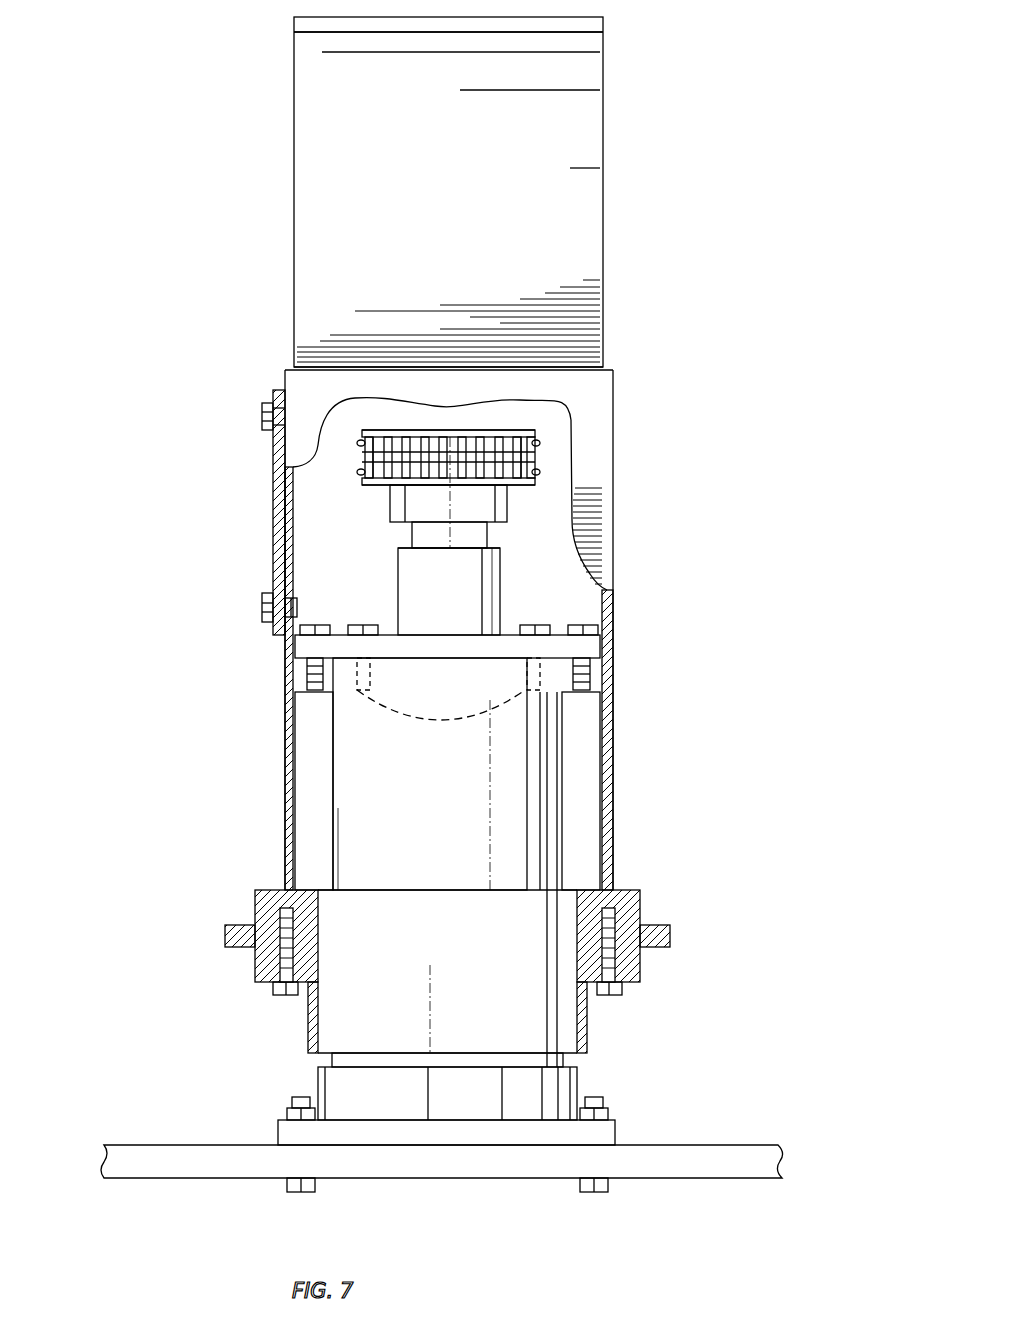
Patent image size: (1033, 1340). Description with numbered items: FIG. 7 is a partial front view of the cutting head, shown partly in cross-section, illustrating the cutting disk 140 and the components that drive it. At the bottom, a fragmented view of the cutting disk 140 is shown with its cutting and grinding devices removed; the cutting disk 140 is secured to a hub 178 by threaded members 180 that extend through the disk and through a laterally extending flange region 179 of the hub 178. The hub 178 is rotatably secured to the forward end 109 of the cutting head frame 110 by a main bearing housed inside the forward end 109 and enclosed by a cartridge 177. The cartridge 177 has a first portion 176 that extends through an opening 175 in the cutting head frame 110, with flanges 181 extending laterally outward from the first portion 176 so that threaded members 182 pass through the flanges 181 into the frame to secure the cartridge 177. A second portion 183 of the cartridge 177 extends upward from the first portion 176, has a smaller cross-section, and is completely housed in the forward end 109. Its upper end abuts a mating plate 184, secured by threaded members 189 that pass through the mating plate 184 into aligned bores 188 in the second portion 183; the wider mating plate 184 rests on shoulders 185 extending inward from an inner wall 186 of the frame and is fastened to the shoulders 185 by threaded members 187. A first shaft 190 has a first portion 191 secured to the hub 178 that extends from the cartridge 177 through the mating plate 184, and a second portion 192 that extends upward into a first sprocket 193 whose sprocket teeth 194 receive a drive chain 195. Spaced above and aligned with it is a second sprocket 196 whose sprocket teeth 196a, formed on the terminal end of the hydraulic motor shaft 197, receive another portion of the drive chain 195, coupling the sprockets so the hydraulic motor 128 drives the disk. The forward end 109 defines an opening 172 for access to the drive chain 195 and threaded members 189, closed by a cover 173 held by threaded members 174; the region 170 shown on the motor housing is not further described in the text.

The forward end 109 is at (600, 392).
The cutting head frame 110 is at (245, 930).
The hydraulic motor 128 is at (612, 183).
The cutting disk 140 is at (210, 1157).
The tank wall 170 is at (345, 198).
The opening 172 is at (292, 472).
The cover 173 is at (275, 510).
The threaded members 174 is at (262, 415).
The opening 175 is at (325, 900).
The first portion 176 is at (340, 1040).
The cartridge 177 is at (568, 841).
The hub 178 is at (555, 1087).
The flange region 179 is at (608, 1130).
The threaded members 180 is at (300, 1195).
The flanges 181 is at (256, 966).
The threaded members 182 is at (286, 996).
The second portion 183 is at (430, 774).
The mating plate 184 is at (476, 656).
The shoulders 185 is at (590, 676).
The inner wall 186 is at (318, 729).
The threaded members 187 is at (313, 625).
The aligned bores 188 is at (505, 718).
The threaded members 189 is at (367, 625).
The first shaft 190 is at (505, 597).
The first portion 191 is at (449, 591).
The second portion 192 is at (480, 534).
The first sprocket 193 is at (410, 500).
The sprocket teeth 194 is at (385, 466).
The drive chain 195 is at (430, 445).
The second sprocket 196 is at (482, 436).
The sprocket teeth 196a is at (545, 445).
The hydraulic motor shaft 197 is at (435, 420).